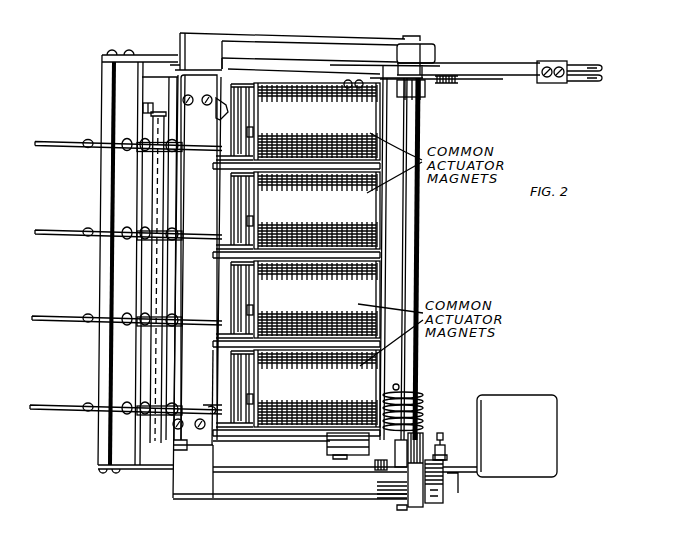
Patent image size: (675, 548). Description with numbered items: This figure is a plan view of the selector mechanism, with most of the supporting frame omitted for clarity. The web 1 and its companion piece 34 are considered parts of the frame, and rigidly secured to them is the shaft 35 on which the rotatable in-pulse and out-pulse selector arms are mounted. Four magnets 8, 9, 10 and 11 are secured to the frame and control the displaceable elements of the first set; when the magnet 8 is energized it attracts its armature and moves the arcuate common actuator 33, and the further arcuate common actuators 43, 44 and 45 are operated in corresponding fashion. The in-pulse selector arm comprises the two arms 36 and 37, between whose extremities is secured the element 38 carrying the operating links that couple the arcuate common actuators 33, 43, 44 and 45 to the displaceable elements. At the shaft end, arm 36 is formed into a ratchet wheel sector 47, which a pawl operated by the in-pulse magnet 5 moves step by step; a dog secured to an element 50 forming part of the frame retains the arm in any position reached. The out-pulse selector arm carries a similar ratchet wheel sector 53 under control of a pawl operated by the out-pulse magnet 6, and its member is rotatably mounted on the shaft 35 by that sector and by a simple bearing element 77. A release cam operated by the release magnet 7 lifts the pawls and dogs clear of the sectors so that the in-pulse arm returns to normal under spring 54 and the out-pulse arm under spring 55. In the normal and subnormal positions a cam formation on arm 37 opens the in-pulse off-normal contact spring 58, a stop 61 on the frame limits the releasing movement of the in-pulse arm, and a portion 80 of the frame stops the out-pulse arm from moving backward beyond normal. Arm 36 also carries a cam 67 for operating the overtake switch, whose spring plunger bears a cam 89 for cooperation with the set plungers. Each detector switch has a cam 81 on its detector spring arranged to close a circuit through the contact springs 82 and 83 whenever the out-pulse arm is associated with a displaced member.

The web 1 is at (282, 499).
The in-pulse magnet 5 is at (118, 438).
The out-pulse magnet 6 is at (307, 72).
The release magnet 7 is at (553, 433).
The magnet 8 is at (298, 388).
The magnet 9 is at (296, 304).
The magnet 10 is at (296, 215).
The magnet 11 is at (296, 126).
The arcuate common actuator 33 is at (41, 406).
The companion piece 34 is at (281, 38).
The shaft 35 is at (409, 237).
The arm 36 is at (292, 472).
The arm 37 is at (313, 69).
The element 38 is at (100, 451).
The arcuate common actuator 43 is at (40, 320).
The arcuate common actuator 44 is at (39, 233).
The arcuate common actuator 45 is at (39, 147).
The ratchet wheel sector 47 is at (444, 474).
The element 50 is at (433, 504).
The ratchet wheel sector 53 is at (431, 450).
The spring 54 is at (370, 484).
The spring 55 is at (423, 407).
The in-pulse off-normal contact 58 is at (462, 66).
The stop 61 is at (431, 50).
The cam 67 is at (140, 104).
The bearing element 77 is at (442, 83).
The portion of the frame 80 is at (415, 488).
The cam 81 is at (210, 410).
The contact spring 82 is at (246, 433).
The contact spring 83 is at (279, 432).
The cam 89 is at (220, 113).